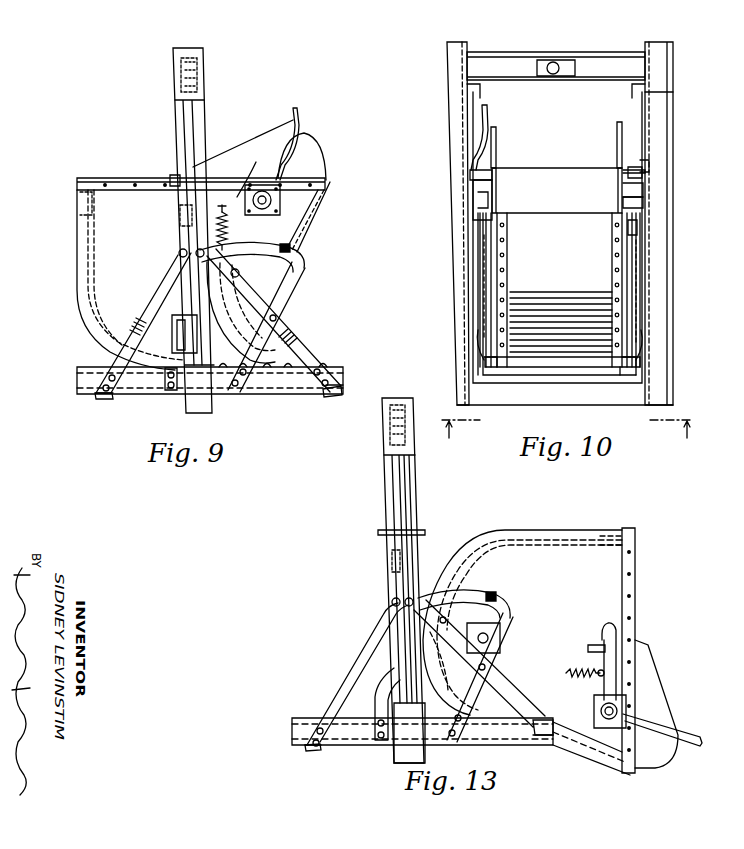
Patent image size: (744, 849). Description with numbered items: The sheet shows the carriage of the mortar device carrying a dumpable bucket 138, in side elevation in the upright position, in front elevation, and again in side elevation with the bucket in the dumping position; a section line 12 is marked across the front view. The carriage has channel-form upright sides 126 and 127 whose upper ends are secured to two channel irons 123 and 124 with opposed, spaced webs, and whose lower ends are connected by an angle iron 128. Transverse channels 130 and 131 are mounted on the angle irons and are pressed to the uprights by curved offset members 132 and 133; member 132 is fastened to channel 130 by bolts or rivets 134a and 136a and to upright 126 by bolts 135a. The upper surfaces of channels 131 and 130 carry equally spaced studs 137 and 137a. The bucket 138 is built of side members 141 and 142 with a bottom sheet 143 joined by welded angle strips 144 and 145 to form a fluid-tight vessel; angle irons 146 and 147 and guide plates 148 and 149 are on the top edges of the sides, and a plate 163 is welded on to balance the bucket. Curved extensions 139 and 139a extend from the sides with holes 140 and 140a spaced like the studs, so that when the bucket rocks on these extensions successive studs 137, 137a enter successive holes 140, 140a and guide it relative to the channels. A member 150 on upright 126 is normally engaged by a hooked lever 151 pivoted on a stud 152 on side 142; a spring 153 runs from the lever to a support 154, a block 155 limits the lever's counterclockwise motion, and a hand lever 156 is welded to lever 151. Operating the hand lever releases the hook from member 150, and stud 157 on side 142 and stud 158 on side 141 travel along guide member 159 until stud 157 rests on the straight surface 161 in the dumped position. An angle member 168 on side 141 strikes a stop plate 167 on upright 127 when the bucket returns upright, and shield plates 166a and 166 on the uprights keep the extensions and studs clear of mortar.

In FIG. 10, the section line 12- 12 is at (568, 438).
In FIG. 9, the channel iron 123 is at (200, 70).
In FIG. 10, the channel iron 123 is at (603, 60).
In FIG. 13, the channel iron 123 is at (411, 423).
In FIG. 9, the channel iron 124 is at (180, 73).
In FIG. 13, the channel iron 124 is at (390, 426).
In FIG. 9, the upright side 126 is at (180, 119).
In FIG. 10, the upright side 126 is at (447, 122).
In FIG. 13, the upright side 126 is at (410, 481).
In FIG. 10, the upright side 127 is at (660, 118).
In FIG. 10, the angle iron 128 is at (490, 406).
In FIG. 9, the channel 130 is at (270, 387).
In FIG. 10, the channel 130 is at (500, 371).
In FIG. 13, the channel 130 is at (333, 740).
In FIG. 10, the channel 131 is at (622, 372).
In FIG. 9, the offset member 132 is at (302, 348).
In FIG. 10, the offset member 132 is at (478, 338).
In FIG. 13, the offset member 132 is at (362, 652).
In FIG. 10, the offset member 133 is at (644, 336).
In FIG. 9, the bolts or rivets 134a is at (112, 382).
In FIG. 13, the bolts or rivets 134a is at (315, 733).
In FIG. 9, the bolts 135a is at (179, 253).
In FIG. 13, the bolts 135a is at (393, 600).
In FIG. 9, the bolts or rivets 136a is at (332, 377).
In FIG. 13, the bolts or rivets 136a is at (530, 740).
In FIG. 10, the studs 137 is at (638, 356).
In FIG. 9, the studs 137a is at (250, 358).
In FIG. 10, the studs 137a is at (490, 360).
In FIG. 9, the bucket 138 is at (108, 198).
In FIG. 13, the bucket 138 is at (546, 552).
In FIG. 10, the curved extension 139 is at (630, 258).
In FIG. 9, the curved extension 139a is at (240, 322).
In FIG. 10, the curved extension 139a is at (486, 258).
In FIG. 13, the curved extension 139a is at (452, 708).
In FIG. 10, the holes 140 is at (638, 282).
In FIG. 10, the holes 140a is at (486, 288).
In FIG. 10, the side member 141 is at (625, 230).
In FIG. 9, the side member 142 is at (85, 288).
In FIG. 10, the side member 142 is at (482, 236).
In FIG. 13, the side member 142 is at (606, 562).
In FIG. 9, the bottom sheet 143 is at (312, 205).
In FIG. 10, the bottom sheet 143 is at (552, 350).
In FIG. 13, the bottom sheet 143 is at (466, 548).
In FIG. 10, the angle strip 144 is at (613, 242).
In FIG. 10, the angle strip 145 is at (503, 245).
In FIG. 10, the angle iron 146 is at (636, 165).
In FIG. 9, the angle iron 147 is at (123, 178).
In FIG. 10, the angle iron 147 is at (494, 167).
In FIG. 13, the angle iron 147 is at (632, 590).
In FIG. 10, the guide plate 148 is at (617, 140).
In FIG. 9, the guide plate 149 is at (306, 146).
In FIG. 10, the guide plate 149 is at (497, 138).
In FIG. 13, the guide plate 149 is at (665, 716).
In FIG. 9, the member 150 is at (180, 215).
In FIG. 10, the member 150 is at (476, 212).
In FIG. 13, the member 150 is at (392, 560).
In FIG. 9, the hooked lever 151 is at (256, 160).
In FIG. 13, the hooked lever 151 is at (617, 636).
In FIG. 9, the stud 152 is at (262, 209).
In FIG. 13, the stud 152 is at (600, 712).
In FIG. 9, the spring 153 is at (226, 224).
In FIG. 13, the spring 153 is at (594, 677).
In FIG. 9, the support 154 is at (226, 244).
In FIG. 13, the support 154 is at (562, 672).
In FIG. 13, the block 155 is at (594, 645).
In FIG. 9, the hand lever 156 is at (298, 112).
In FIG. 10, the hand lever 156 is at (489, 110).
In FIG. 13, the hand lever 156 is at (703, 735).
In FIG. 9, the stud 157 is at (177, 331).
In FIG. 10, the stud 157 is at (482, 312).
In FIG. 13, the stud 157 is at (502, 636).
In FIG. 10, the stud 158 is at (640, 312).
In FIG. 9, the guide member 159 is at (296, 280).
In FIG. 13, the guide member 159 is at (510, 606).
In FIG. 9, the straight surface 161 is at (294, 256).
In FIG. 13, the straight surface 161 is at (511, 617).
In FIG. 9, the plate 163 is at (80, 207).
In FIG. 10, the shield plate 166 is at (650, 163).
In FIG. 9, the shield plate 166a is at (172, 175).
In FIG. 10, the shield plate 166a is at (472, 170).
In FIG. 13, the shield plate 166a is at (380, 531).
In FIG. 10, the stop plate 167 is at (643, 190).
In FIG. 10, the angle member 168 is at (643, 200).